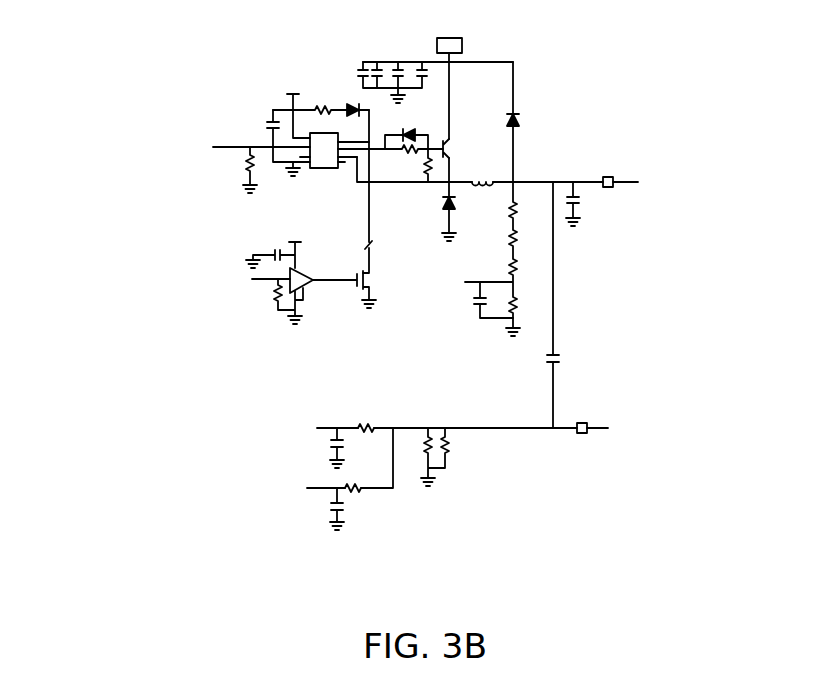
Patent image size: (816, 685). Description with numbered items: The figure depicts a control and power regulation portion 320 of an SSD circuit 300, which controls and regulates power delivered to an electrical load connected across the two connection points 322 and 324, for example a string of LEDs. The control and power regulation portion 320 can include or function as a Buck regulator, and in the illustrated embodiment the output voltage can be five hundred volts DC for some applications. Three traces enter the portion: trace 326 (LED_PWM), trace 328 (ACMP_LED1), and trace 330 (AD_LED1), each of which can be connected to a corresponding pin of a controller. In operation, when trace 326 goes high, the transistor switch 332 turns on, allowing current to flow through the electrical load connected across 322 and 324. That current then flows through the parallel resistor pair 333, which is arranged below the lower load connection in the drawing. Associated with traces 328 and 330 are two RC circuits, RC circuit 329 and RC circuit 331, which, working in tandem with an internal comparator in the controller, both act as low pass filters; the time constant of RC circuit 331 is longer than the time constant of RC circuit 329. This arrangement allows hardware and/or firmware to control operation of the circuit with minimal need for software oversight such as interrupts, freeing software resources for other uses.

The SSD circuit 300 is at (103, 34).
The control and power regulation portion 320 is at (133, 220).
The load connection 322 is at (638, 182).
The load connection 324 is at (608, 428).
The trace 326 is at (213, 147).
The trace 328 is at (317, 428).
The RC circuit 329 is at (373, 405).
The trace 330 is at (307, 488).
The RC circuit 331 is at (373, 530).
The transistor switch 332 is at (447, 145).
The parallel resistor pair 333 is at (480, 500).